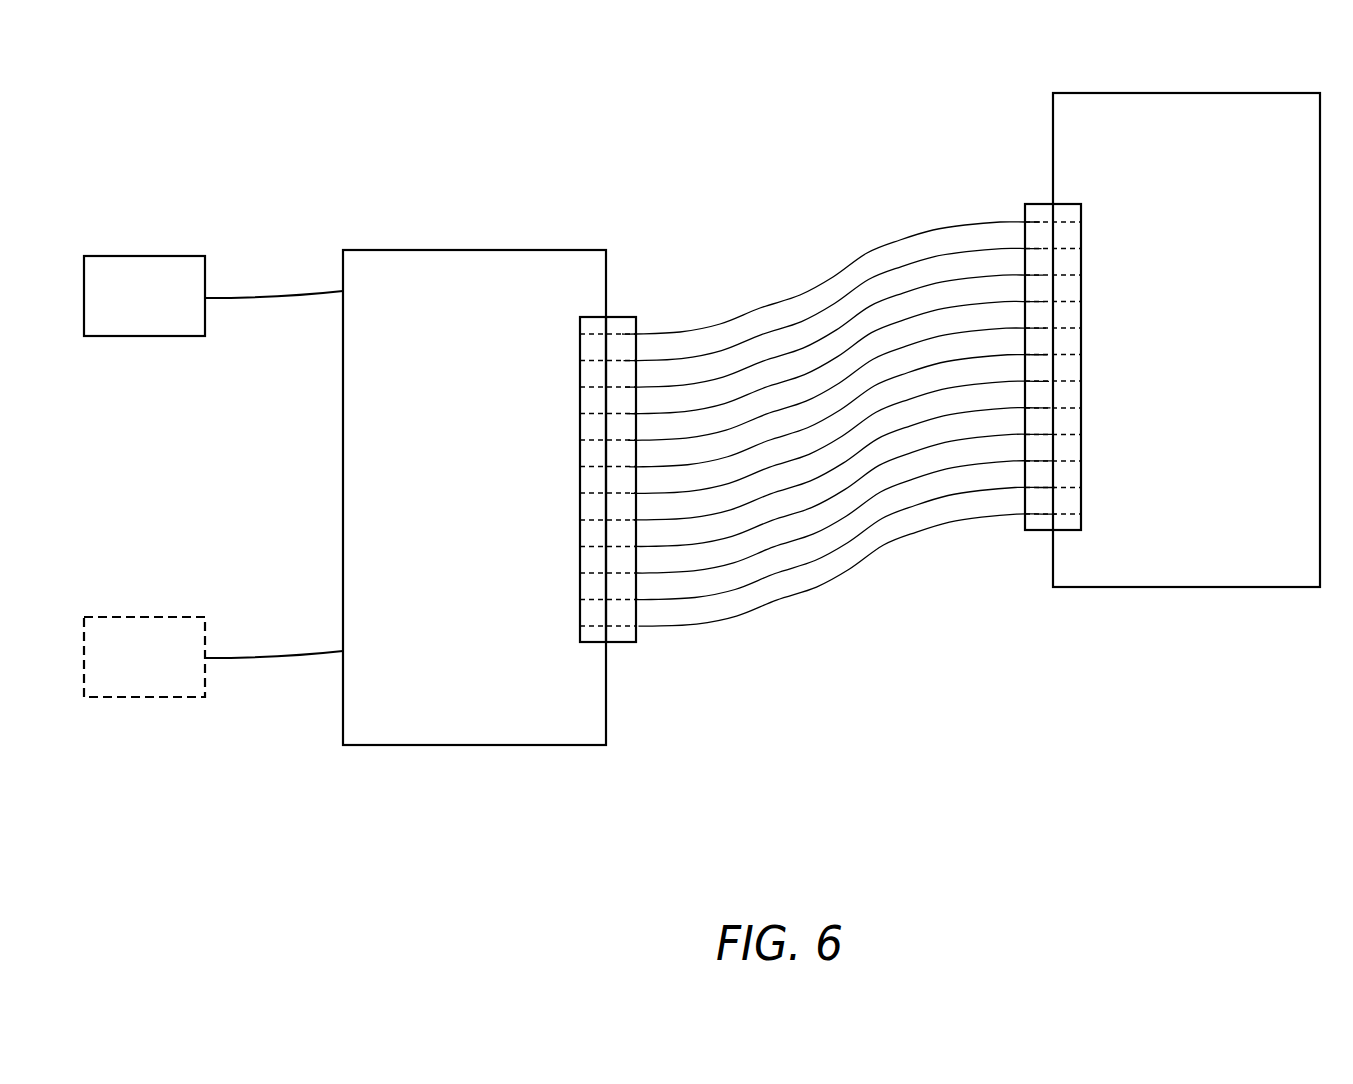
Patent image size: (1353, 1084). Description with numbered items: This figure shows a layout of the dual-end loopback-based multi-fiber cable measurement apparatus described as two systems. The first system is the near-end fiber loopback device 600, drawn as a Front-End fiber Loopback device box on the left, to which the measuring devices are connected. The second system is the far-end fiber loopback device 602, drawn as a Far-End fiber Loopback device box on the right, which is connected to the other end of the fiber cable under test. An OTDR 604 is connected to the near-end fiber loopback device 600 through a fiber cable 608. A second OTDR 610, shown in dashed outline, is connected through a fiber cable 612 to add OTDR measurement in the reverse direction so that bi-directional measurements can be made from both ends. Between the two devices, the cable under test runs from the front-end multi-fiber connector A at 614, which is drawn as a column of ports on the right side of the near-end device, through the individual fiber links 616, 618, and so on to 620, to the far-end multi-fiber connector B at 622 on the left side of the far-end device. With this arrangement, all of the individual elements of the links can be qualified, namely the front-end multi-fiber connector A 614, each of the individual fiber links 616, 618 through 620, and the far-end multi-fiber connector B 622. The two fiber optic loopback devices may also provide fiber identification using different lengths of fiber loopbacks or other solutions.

The near-end fiber loopback device 600 is at (498, 246).
The far-end fiber loopback device 602 is at (1158, 89).
The OTDR 604 is at (162, 253).
The fiber cable 608 is at (308, 291).
The OTDR 610 is at (160, 611).
The fiber cable 612 is at (310, 647).
The front-end multi-fiber connector A 614 is at (616, 312).
The individual fiber link 616 is at (810, 295).
The individual fiber link 618 is at (876, 268).
The individual fiber link 620 is at (880, 545).
The far-end multi-fiber connector B 622 is at (1048, 201).